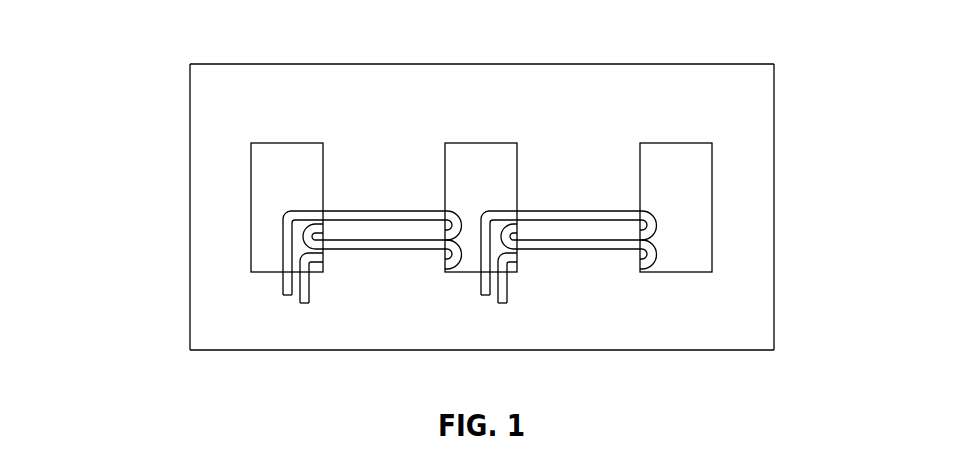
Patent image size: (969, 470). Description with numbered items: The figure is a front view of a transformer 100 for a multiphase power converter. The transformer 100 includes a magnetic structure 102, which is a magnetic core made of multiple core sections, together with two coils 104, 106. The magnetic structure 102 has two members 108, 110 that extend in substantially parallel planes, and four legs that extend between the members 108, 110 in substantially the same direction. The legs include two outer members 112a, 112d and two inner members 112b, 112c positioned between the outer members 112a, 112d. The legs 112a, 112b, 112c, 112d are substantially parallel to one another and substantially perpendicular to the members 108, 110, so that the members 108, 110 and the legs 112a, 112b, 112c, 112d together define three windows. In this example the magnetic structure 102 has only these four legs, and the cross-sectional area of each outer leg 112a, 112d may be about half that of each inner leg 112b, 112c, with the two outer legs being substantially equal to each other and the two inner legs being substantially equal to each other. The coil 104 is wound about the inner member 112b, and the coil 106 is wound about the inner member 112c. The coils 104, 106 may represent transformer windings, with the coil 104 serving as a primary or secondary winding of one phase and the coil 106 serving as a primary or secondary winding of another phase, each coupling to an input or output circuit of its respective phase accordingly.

The transformer 100 is at (150, 48).
The magnetic structure 102 is at (774, 98).
The coil 104 is at (407, 250).
The coil 106 is at (593, 250).
The member 108 is at (548, 77).
The member 110 is at (385, 333).
The outer member 112a is at (207, 198).
The inner member 112b is at (418, 175).
The inner member 112c is at (608, 175).
The outer member 112d is at (755, 183).